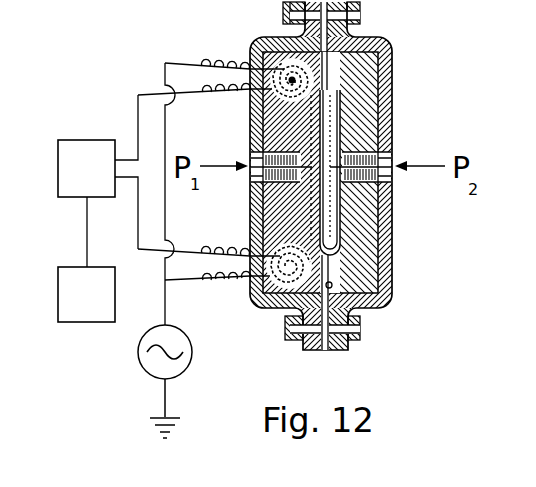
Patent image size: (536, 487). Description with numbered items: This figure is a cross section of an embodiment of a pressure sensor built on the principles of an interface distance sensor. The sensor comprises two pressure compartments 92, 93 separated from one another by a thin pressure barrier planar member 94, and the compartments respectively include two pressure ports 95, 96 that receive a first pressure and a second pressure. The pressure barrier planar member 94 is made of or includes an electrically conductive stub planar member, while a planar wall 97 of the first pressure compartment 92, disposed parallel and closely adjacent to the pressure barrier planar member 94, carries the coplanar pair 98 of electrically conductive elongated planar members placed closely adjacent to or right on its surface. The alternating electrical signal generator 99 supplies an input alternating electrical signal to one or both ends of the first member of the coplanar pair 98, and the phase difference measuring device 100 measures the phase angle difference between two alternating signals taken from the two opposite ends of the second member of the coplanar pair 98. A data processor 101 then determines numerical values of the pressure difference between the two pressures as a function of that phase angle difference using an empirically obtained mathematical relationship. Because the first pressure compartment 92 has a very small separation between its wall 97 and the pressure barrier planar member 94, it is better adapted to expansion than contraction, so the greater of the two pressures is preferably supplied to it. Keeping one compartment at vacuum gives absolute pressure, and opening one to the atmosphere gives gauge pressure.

The first pressure compartment 92 is at (386, 73).
The second pressure compartment 93 is at (340, 210).
The pressure barrier planar member 94 is at (335, 128).
The pressure port 95 is at (246, 156).
The pressure port 96 is at (395, 162).
The planar wall 97 is at (372, 272).
The coplanar pair of electrically conductive elongated planar members 98 is at (262, 203).
The alternating electrical signal generator 99 is at (193, 349).
The phase difference measuring device 100 is at (88, 135).
The data processor 101 is at (90, 325).